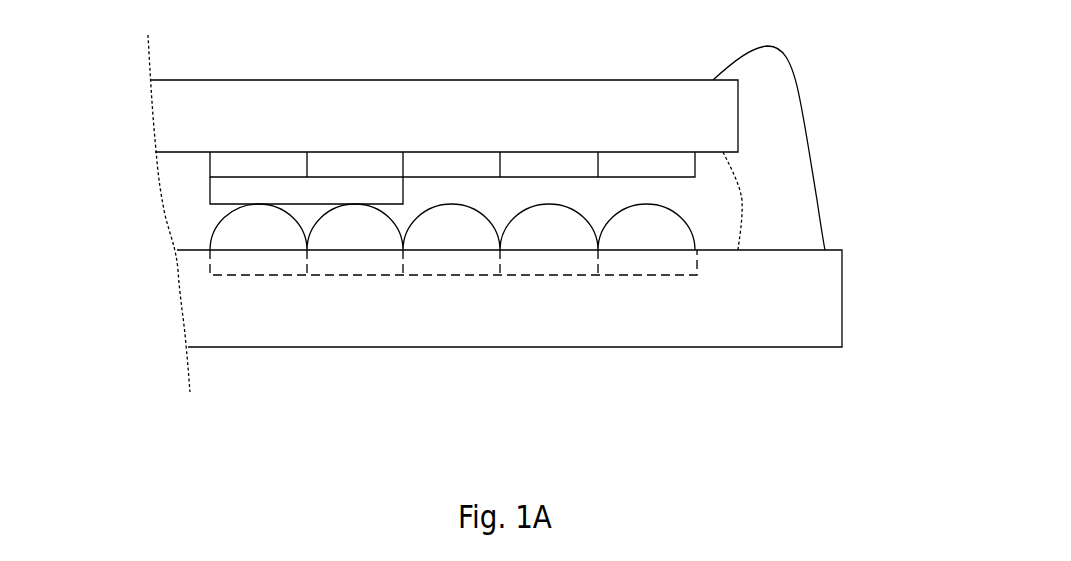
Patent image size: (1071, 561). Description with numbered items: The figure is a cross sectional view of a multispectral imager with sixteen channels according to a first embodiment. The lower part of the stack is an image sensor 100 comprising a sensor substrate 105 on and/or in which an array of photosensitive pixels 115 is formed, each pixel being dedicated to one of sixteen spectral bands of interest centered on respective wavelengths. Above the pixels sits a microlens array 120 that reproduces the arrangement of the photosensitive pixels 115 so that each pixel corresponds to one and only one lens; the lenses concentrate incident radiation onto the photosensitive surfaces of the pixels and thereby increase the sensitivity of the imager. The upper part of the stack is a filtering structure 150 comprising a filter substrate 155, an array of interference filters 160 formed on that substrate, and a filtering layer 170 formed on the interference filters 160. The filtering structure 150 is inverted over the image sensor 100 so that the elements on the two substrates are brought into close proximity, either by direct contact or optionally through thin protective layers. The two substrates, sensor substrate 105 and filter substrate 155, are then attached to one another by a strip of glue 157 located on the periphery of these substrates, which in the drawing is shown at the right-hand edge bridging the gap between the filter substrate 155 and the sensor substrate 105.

The image sensor 100 is at (866, 203).
The sensor substrate 105 is at (212, 320).
The photosensitive pixels 115 is at (252, 265).
The microlens array 120 is at (230, 228).
The filtering structure 150 is at (866, 80).
The filter substrate 155 is at (187, 129).
The strip of glue 157 is at (768, 87).
The interference filters 160 is at (263, 160).
The filtering layer 170 is at (203, 198).